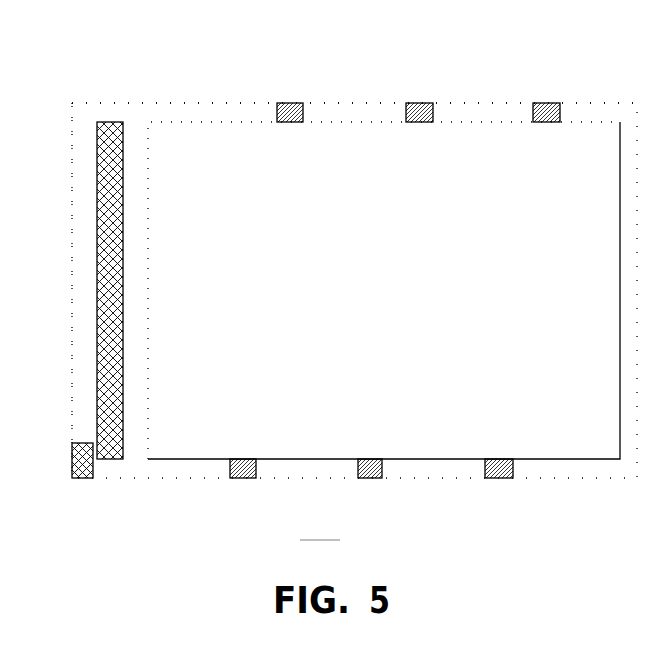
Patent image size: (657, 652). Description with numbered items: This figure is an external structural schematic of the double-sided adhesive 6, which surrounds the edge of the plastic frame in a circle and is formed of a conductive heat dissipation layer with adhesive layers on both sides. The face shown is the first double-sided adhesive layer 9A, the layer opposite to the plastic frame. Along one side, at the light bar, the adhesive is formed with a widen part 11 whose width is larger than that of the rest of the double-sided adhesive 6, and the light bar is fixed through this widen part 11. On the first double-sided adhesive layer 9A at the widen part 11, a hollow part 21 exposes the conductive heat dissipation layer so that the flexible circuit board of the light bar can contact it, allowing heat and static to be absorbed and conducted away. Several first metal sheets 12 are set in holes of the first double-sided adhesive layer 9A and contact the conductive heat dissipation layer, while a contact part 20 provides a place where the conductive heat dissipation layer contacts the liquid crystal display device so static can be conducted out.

The double-sided adhesive 6 is at (502, 96).
The first double-sided adhesive layer 9A is at (178, 103).
The widen part 11 is at (72, 243).
The first metal sheet 12 is at (417, 103).
The hollow part 21 is at (97, 134).
The contact part 20 is at (72, 456).